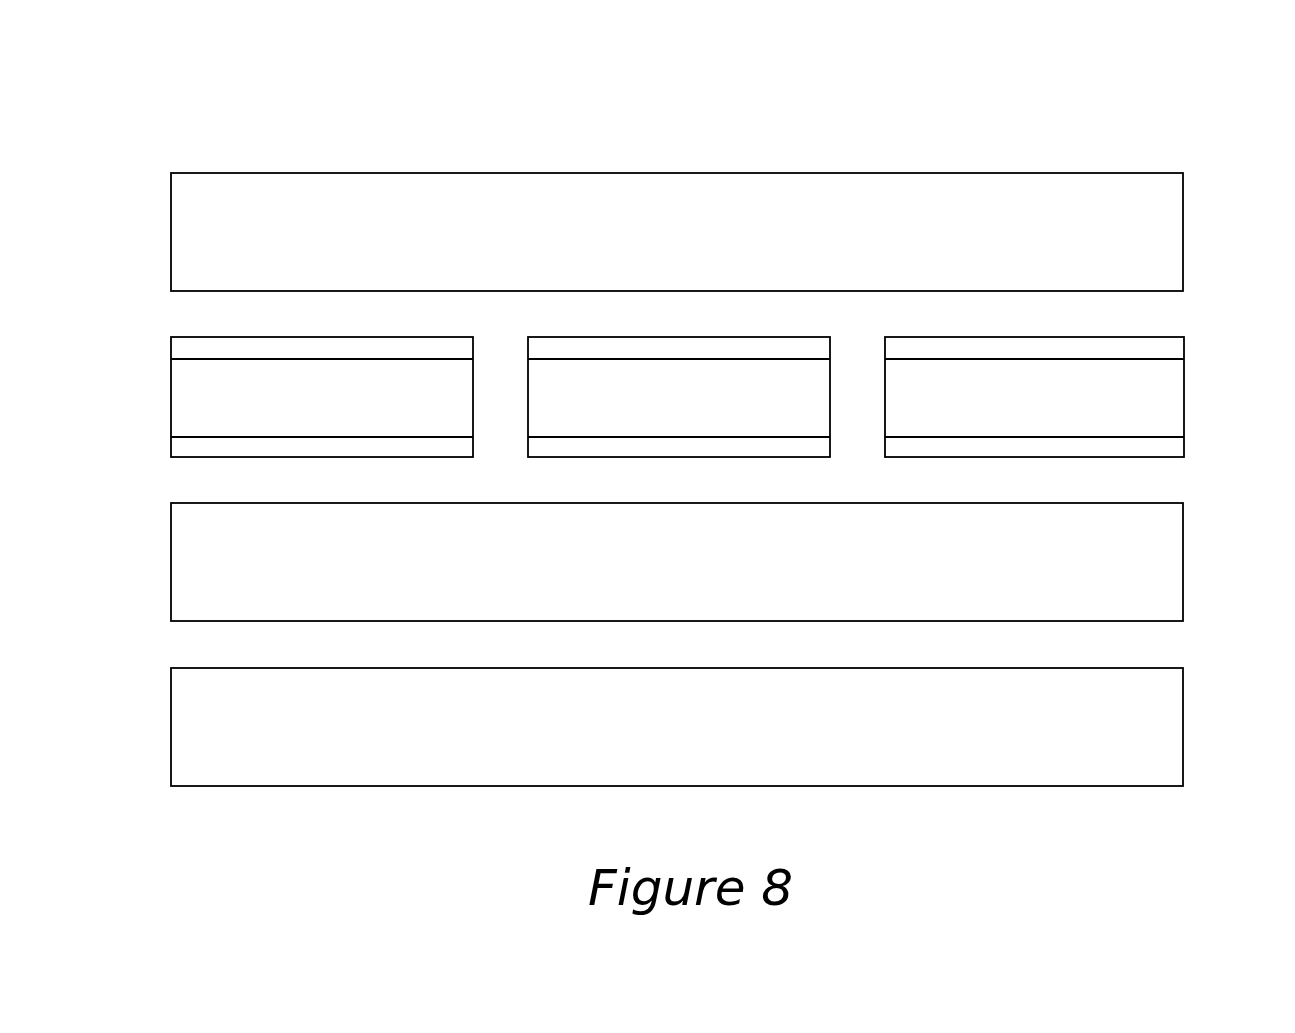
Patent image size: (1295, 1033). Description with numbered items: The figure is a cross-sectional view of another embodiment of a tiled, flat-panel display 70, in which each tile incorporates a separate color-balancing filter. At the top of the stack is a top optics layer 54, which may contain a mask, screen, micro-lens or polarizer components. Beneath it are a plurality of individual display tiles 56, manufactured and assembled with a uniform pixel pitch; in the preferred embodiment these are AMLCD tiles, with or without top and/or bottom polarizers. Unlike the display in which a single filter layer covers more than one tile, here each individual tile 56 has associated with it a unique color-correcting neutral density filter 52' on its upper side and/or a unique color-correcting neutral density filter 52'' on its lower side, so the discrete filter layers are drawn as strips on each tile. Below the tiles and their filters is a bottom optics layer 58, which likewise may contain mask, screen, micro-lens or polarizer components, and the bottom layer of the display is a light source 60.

The tiled flat-panel display 70 is at (276, 112).
The top optics layer 54 is at (1157, 172).
The display tiles 56 is at (334, 417).
The color-correcting neutral density filter 52' is at (1227, 323).
The color-correcting neutral density filter 52'' is at (1228, 418).
The bottom optics layer 58 is at (1183, 568).
The light source 60 is at (1183, 734).